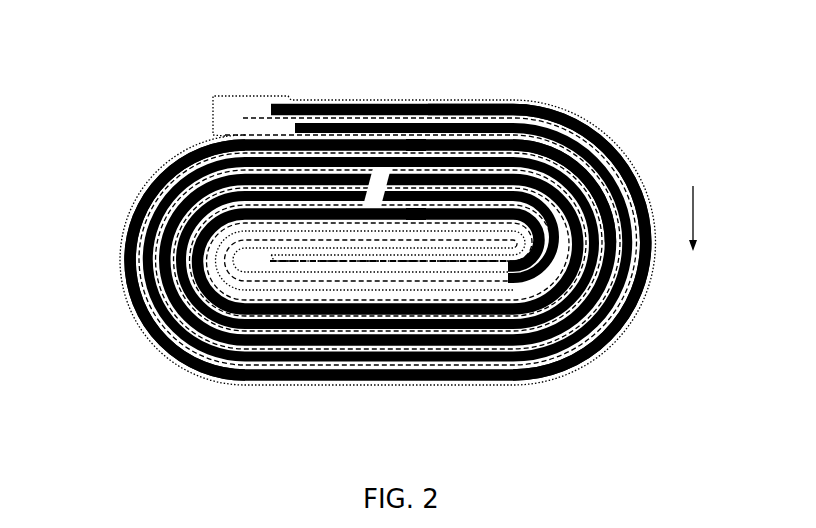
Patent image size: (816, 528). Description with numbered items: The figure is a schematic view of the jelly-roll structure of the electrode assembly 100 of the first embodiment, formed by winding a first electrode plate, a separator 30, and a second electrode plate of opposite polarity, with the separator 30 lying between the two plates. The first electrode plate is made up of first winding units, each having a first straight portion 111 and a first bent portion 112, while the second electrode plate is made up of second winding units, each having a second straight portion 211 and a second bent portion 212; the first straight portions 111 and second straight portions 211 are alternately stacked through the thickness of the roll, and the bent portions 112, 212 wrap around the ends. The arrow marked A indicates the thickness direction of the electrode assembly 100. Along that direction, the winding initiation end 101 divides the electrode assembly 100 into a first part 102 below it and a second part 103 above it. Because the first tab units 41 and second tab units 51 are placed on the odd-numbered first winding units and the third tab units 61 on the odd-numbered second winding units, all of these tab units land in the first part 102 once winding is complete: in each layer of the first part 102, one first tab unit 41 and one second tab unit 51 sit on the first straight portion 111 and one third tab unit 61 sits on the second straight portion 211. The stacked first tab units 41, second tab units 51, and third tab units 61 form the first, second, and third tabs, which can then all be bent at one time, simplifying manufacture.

The electrode assembly 100 is at (394, 234).
The winding initiation end 101 is at (535, 373).
The first part 102 is at (380, 122).
The second part 103 is at (367, 340).
The first straight portion 111 is at (466, 93).
The first bent portion 112 is at (605, 140).
The second straight portion 211 is at (580, 120).
The second bent portion 212 is at (628, 292).
The separator 30 is at (122, 208).
The first tab unit 41 is at (312, 117).
The second tab unit 51 is at (508, 93).
The third tab unit 61 is at (410, 207).